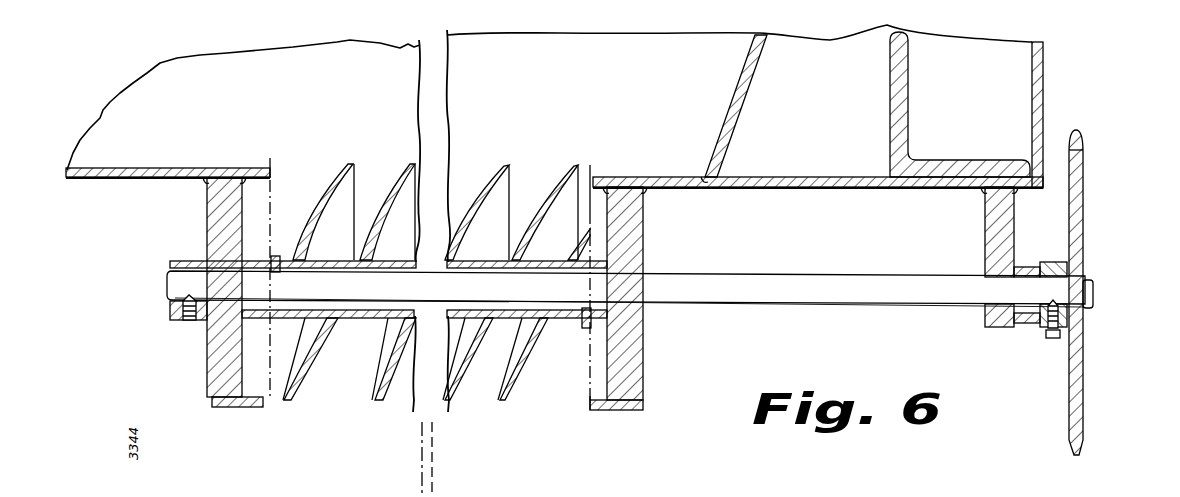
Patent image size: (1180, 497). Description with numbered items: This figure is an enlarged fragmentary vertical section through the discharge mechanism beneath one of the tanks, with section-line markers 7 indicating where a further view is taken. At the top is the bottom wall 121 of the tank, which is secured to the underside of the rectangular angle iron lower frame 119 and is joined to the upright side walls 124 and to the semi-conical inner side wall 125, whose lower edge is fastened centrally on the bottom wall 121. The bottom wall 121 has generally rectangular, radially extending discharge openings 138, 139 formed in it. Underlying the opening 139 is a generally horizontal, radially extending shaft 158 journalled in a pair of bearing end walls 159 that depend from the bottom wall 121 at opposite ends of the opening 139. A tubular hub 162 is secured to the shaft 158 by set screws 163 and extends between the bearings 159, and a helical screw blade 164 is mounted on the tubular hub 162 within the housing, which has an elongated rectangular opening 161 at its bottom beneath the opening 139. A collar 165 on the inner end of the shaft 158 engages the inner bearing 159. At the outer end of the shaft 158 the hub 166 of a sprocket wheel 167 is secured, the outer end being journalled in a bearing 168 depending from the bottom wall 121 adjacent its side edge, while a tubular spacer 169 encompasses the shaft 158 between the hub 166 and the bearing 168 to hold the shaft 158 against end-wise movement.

The lower frame 119 is at (910, 86).
The bottom wall 121 is at (673, 175).
The side walls 124 is at (1045, 80).
The semi-conical inner side wall 125 is at (752, 92).
The discharge opening 138 is at (540, 489).
The discharge opening 139 is at (597, 173).
The shaft 158 is at (763, 279).
The bearing end walls 159 is at (216, 238).
The opening 161 is at (555, 407).
The tubular hub 162 is at (363, 322).
The set screws 163 is at (278, 252).
The helical screw blade 164 is at (510, 164).
The collar 165 is at (176, 322).
The hub 166 is at (1060, 262).
The sprocket wheel 167 is at (1085, 200).
The bearing 168 is at (985, 250).
The tubular spacer 169 is at (1027, 328).
The section line 7- 7 is at (348, 138).